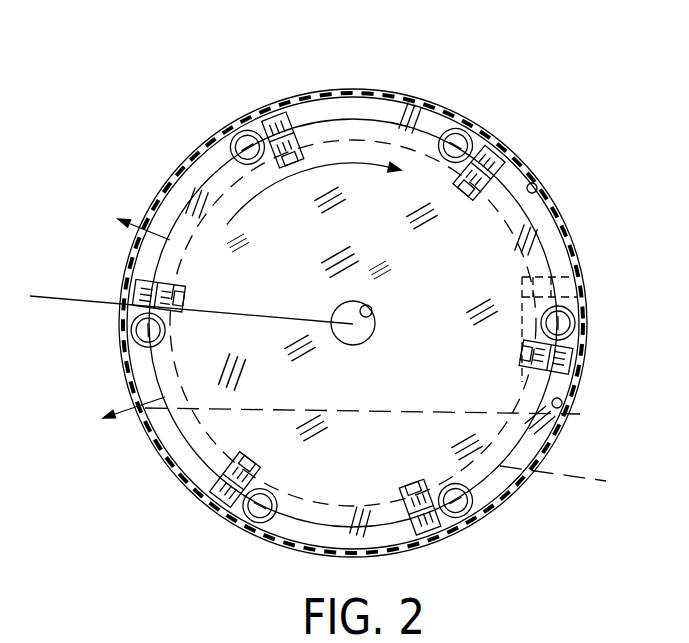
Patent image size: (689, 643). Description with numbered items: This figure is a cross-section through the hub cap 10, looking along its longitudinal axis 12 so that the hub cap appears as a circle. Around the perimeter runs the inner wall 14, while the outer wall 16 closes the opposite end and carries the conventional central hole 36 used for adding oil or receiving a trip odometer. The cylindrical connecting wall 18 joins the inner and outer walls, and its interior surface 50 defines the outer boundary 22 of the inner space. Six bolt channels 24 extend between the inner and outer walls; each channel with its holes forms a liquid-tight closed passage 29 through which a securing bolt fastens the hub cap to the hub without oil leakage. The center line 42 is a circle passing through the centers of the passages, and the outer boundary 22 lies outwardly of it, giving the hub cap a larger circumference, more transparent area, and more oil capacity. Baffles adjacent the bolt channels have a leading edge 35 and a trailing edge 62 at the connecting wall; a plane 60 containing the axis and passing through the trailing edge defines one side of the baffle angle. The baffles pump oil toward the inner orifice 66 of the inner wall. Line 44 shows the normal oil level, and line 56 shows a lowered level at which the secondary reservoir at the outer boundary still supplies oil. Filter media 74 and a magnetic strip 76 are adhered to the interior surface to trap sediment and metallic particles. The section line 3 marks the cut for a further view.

The hub cap 10 is at (135, 110).
The longitudinal axis 12 is at (355, 325).
The inner wall 14 is at (606, 481).
The outer wall 16 is at (290, 284).
The connecting wall 18 is at (450, 110).
The outer boundary 22 is at (562, 237).
The bolt channels 24 is at (483, 497).
The closed passage 29 is at (580, 304).
The section line 3— 3 is at (136, 319).
The leading edge 35 is at (330, 90).
The central hole 36 is at (371, 307).
The center line 42 is at (360, 123).
The normal oil level line 44 is at (421, 409).
The interior surface 50 is at (548, 198).
The low oil level line 56 is at (298, 503).
The plane 60 is at (318, 322).
The trailing edge 62 is at (263, 118).
The inner orifice 66 is at (176, 354).
The filter media 74 is at (422, 542).
The magnetic strip 76 is at (562, 405).